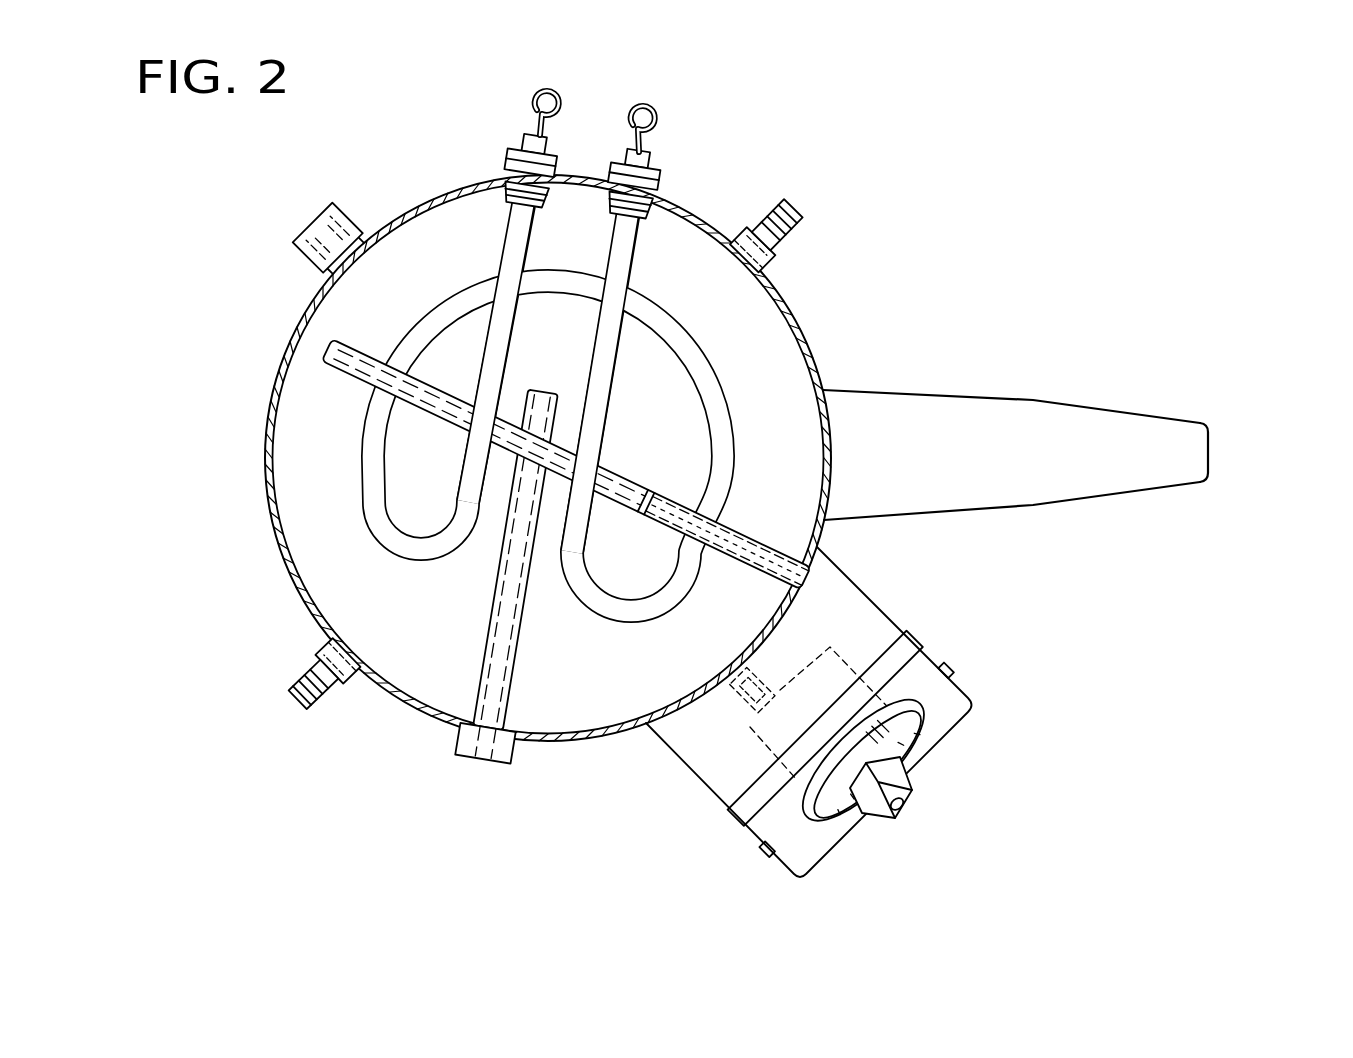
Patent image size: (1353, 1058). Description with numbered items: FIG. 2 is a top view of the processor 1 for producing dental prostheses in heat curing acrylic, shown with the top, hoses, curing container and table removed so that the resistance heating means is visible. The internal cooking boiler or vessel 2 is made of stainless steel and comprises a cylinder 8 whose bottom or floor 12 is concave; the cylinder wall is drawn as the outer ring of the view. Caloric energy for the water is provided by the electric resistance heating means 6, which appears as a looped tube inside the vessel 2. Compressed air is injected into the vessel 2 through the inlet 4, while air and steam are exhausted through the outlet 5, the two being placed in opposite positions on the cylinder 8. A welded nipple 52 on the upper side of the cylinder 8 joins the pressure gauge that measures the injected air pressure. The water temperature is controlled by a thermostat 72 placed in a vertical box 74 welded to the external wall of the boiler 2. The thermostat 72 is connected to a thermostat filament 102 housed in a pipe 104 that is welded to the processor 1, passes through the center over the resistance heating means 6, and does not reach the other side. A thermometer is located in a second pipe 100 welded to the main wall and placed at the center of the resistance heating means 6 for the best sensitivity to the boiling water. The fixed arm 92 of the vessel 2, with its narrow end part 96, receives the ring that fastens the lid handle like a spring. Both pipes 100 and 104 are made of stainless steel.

The processor 1 is at (479, 458).
The vessel 2 is at (264, 487).
The inlet 4 is at (766, 270).
The outlet 5 is at (343, 667).
The electric resistance heating means 6 is at (380, 523).
The cylinder 8 is at (313, 617).
The floor 12 is at (305, 380).
The welded nipple 52 is at (311, 264).
The thermostat 72 is at (917, 752).
The vertical box 74 is at (767, 821).
The fixed arm 92 is at (1067, 400).
The narrow end part 96 is at (1193, 440).
The pipe 100 is at (510, 704).
The thermostat filament 102 is at (806, 580).
The pipe 104 is at (764, 548).